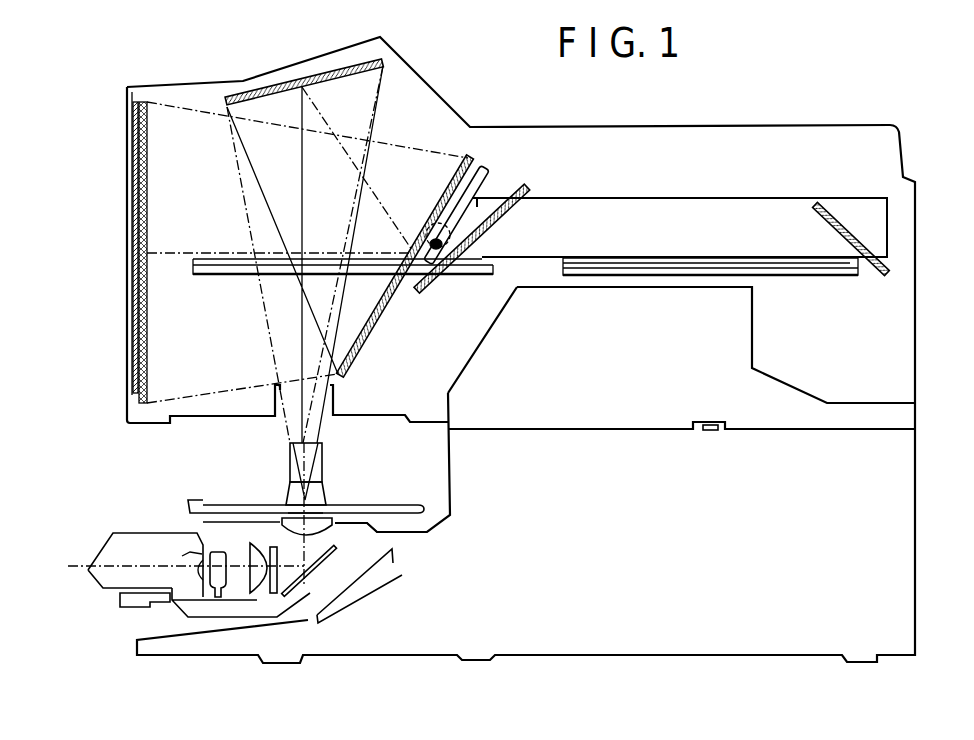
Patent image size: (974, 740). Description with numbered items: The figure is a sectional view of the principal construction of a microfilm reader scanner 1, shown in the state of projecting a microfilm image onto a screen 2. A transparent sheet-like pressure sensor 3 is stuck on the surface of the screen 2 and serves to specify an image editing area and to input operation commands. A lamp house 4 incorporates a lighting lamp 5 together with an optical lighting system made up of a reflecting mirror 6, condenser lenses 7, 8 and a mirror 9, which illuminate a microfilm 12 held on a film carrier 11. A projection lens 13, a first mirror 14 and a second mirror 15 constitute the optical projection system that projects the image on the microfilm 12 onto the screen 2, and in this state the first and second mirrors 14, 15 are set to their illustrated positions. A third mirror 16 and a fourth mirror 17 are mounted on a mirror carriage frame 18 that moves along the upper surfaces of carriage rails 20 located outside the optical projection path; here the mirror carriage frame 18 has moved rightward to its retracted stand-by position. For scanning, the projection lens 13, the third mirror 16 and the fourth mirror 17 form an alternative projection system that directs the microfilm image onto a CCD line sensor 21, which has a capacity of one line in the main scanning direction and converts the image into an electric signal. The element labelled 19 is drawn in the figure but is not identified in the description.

The microfilm reader scanner 1 is at (915, 535).
The screen 2 is at (147, 150).
The pressure sensor 3 is at (133, 170).
The lamp house 4 is at (113, 533).
The lighting lamp 5 is at (211, 558).
The reflecting mirror 6 is at (200, 572).
The condenser lens 7 is at (247, 540).
The condenser lens 8 is at (347, 520).
The mirror 9 is at (300, 592).
The film carrier 11 is at (397, 505).
The microfilm 12 is at (317, 500).
The projection lens 13 is at (323, 468).
The first mirror 14 is at (320, 68).
The second mirror 15 is at (470, 157).
The third mirror 16 is at (527, 187).
The fourth mirror 17 is at (837, 217).
The mirror carriage frame 18 is at (680, 198).
The exposure lamp unit 19 is at (490, 172).
The carriage rails 20 is at (585, 278).
The CCD line sensor 21 is at (711, 433).